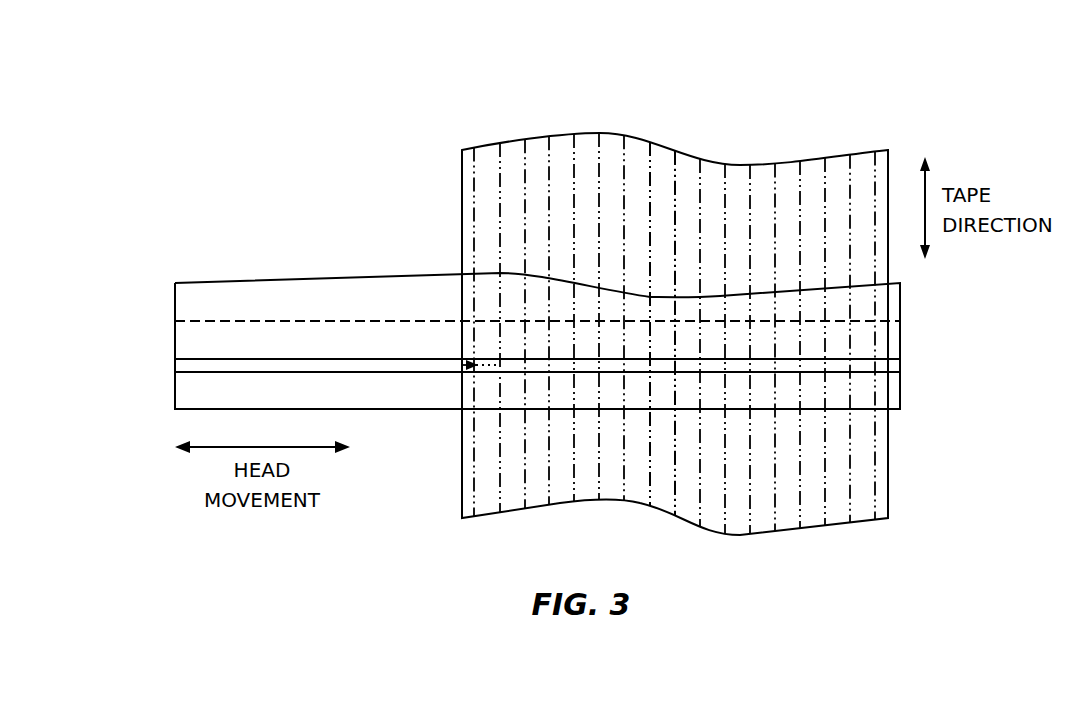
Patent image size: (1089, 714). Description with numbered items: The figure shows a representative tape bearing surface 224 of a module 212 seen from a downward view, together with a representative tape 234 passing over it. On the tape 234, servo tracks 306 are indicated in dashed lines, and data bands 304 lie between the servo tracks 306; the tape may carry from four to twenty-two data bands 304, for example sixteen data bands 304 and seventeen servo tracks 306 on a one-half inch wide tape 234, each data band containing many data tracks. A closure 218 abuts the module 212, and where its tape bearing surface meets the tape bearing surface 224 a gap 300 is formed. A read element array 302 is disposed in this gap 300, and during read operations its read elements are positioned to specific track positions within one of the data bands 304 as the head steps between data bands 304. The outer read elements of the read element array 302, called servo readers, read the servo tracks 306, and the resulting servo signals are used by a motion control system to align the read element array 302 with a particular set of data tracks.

The module 212 is at (232, 280).
The closure 218 is at (175, 390).
The tape bearing surface 224 is at (157, 337).
The tape 234 is at (462, 167).
The gap 300 is at (175, 365).
The read element array 302 is at (462, 365).
The data bands 304 is at (510, 155).
The servo tracks 306 is at (675, 163).